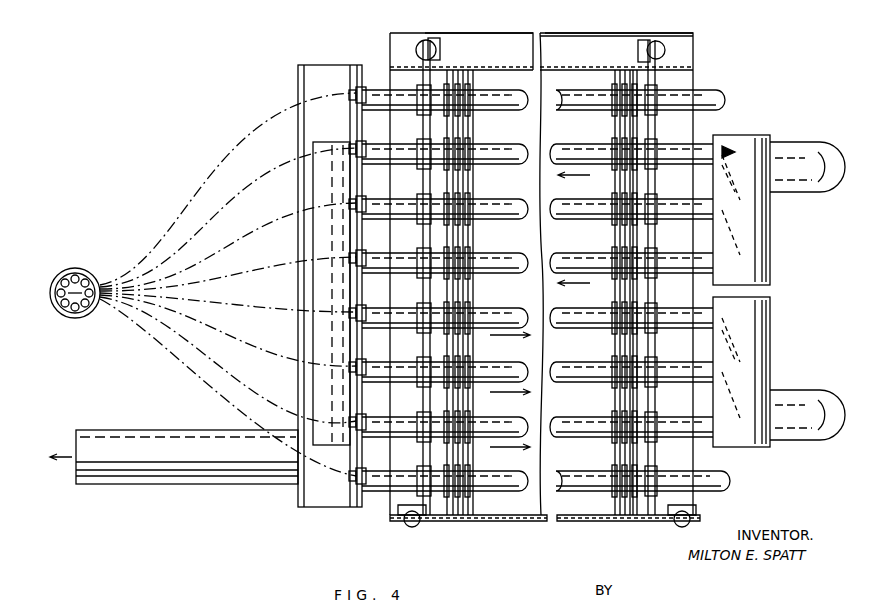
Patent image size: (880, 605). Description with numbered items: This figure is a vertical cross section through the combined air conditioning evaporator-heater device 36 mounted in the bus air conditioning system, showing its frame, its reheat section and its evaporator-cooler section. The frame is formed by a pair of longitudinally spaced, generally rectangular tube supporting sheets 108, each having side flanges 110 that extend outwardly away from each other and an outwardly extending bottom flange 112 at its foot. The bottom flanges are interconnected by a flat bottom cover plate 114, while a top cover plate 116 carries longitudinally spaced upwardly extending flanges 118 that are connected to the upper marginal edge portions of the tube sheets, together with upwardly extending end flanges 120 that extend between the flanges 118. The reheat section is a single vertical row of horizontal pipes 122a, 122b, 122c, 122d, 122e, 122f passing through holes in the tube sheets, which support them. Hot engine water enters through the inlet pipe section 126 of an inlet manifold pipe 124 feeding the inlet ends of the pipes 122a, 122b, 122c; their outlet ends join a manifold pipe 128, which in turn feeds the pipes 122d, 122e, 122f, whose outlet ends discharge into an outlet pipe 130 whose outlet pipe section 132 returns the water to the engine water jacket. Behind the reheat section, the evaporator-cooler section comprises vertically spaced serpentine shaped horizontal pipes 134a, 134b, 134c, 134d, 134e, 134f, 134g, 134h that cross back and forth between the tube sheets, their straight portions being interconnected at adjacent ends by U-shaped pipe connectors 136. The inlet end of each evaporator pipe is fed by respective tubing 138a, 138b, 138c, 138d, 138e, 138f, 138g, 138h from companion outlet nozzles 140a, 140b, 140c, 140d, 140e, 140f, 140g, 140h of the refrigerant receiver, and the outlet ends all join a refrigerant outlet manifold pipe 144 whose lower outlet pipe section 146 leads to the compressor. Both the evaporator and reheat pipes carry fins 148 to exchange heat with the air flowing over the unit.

The combined air conditioning evaporator-heater device 36 is at (700, 33).
The tube supporting sheets 108 is at (428, 70).
The side flanges 110 is at (395, 36).
The bottom flange 112 is at (396, 511).
The bottom cover plate 114 is at (512, 522).
The top cover plate 116 is at (497, 59).
The upwardly extending flanges 118 is at (434, 42).
The end flanges 120 is at (562, 33).
The horizontal pipe 122a is at (704, 142).
The horizontal pipe 122b is at (664, 203).
The horizontal pipe 122c is at (664, 257).
The horizontal pipe 122d is at (664, 311).
The horizontal pipe 122e is at (664, 365).
The horizontal pipe 122f is at (664, 420).
The inlet manifold pipe 124 is at (771, 141).
The inlet pipe section 126 is at (800, 195).
The manifold pipe 128 is at (313, 158).
The outlet pipe 130 is at (773, 332).
The outlet pipe section 132 is at (789, 390).
The serpentine shaped horizontal pipe 134a is at (357, 91).
The serpentine shaped horizontal pipe 134b is at (357, 146).
The serpentine shaped horizontal pipe 134c is at (357, 202).
The serpentine shaped horizontal pipe 134d is at (357, 259).
The serpentine shaped horizontal pipe 134e is at (357, 314).
The serpentine shaped horizontal pipe 134f is at (357, 366).
The serpentine shaped horizontal pipe 134g is at (357, 421).
The fitting 134h is at (357, 476).
The U-shaped pipe connectors 136 is at (728, 104).
The tubing 138a is at (192, 222).
The tubing 138b is at (252, 198).
The tubing 138c is at (260, 234).
The tubing 138d is at (258, 275).
The tubing 138e is at (262, 316).
The tubing 138f is at (258, 350).
The tubing 138g is at (242, 388).
The tubing 138h is at (180, 392).
The outlet nozzle 140a is at (67, 279).
The outlet nozzle 140b is at (76, 275).
The outlet nozzle 140c is at (88, 281).
The outlet nozzle 140d is at (90, 296).
The outlet nozzle 140e is at (86, 307).
The outlet nozzle 140f is at (76, 311).
The outlet nozzle 140g is at (63, 307).
The outlet nozzle 140h is at (59, 289).
The refrigerant outlet manifold pipe 144 is at (298, 88).
The lower outlet pipe section 146 is at (145, 486).
The fins 148 is at (474, 128).